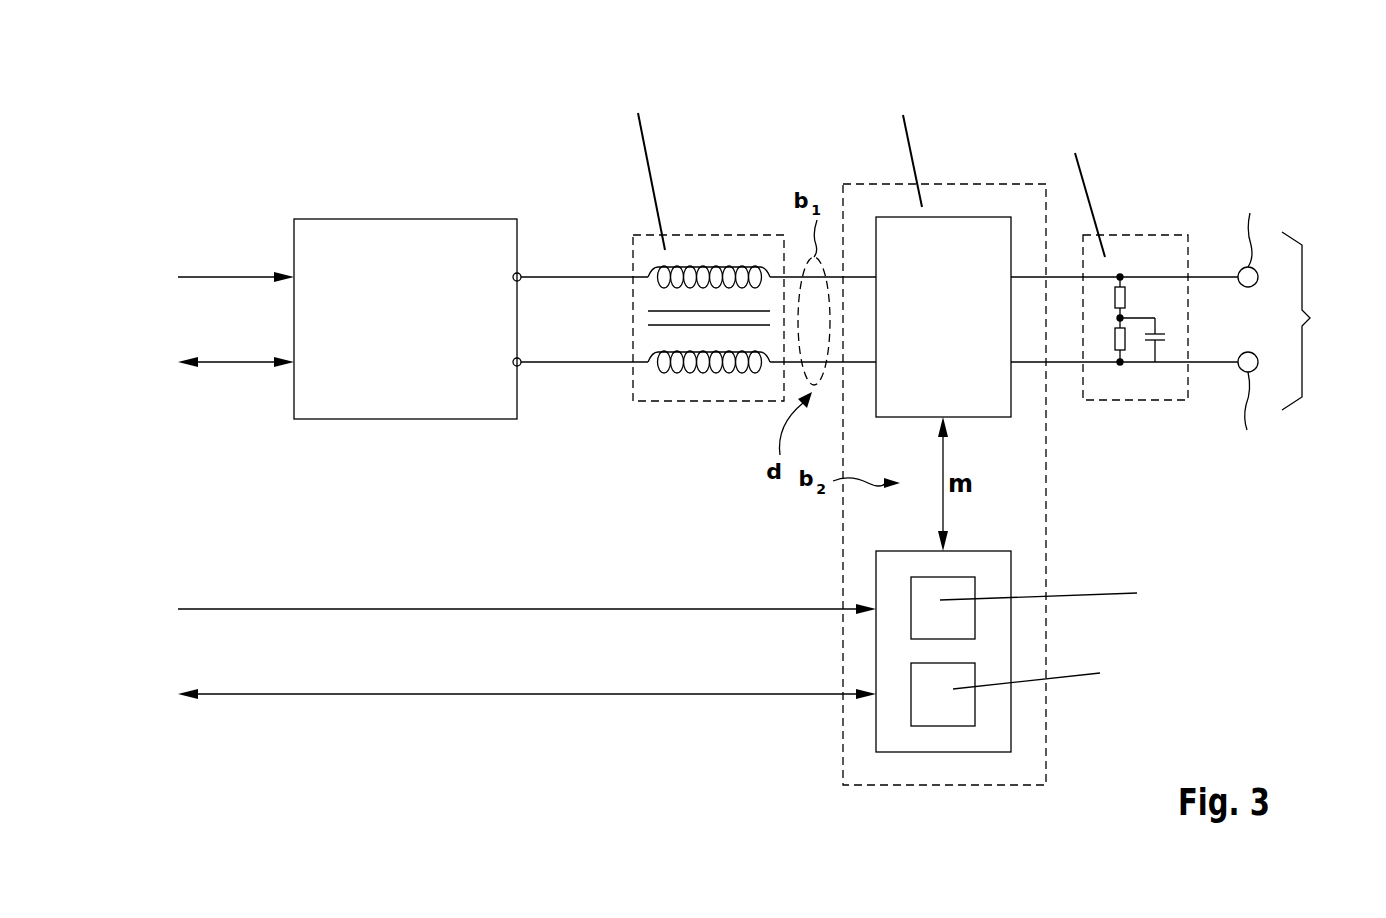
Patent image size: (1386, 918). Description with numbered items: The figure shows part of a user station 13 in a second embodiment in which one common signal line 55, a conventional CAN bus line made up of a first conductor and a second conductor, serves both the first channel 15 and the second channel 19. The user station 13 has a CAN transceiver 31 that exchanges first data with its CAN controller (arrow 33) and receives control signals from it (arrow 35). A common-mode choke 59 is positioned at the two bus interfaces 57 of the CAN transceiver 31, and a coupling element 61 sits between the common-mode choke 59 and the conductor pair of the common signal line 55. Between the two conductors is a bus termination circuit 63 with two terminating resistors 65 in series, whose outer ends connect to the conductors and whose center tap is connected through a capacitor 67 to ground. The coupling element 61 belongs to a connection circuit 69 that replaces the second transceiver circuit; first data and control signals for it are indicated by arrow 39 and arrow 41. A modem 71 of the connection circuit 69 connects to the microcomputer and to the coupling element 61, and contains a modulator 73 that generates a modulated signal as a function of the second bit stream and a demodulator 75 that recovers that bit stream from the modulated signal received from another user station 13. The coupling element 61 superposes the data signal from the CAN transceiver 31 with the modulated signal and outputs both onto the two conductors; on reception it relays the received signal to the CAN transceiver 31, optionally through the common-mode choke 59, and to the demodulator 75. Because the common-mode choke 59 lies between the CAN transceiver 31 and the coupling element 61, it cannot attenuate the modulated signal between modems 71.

The user station 13 is at (196, 152).
The first channel 15 is at (1291, 152).
The second channel 19 is at (1320, 166).
The CAN transceiver 31 is at (405, 219).
The arrow 33 is at (223, 365).
The arrow 35 is at (223, 275).
The arrow 39 is at (223, 698).
The arrow 41 is at (223, 608).
The common signal line 55 is at (1280, 321).
The bus interfaces 57 is at (521, 275).
The common-mode choke 59 is at (707, 235).
The coupling element 61 is at (889, 217).
The bus termination circuit 63 is at (1148, 241).
The terminating resistors 65 is at (1113, 297).
The capacitor 67 is at (1165, 337).
The connection circuit 69 is at (943, 184).
The modem 71 is at (1011, 569).
The modulator 73 is at (975, 619).
The demodulator 75 is at (975, 706).